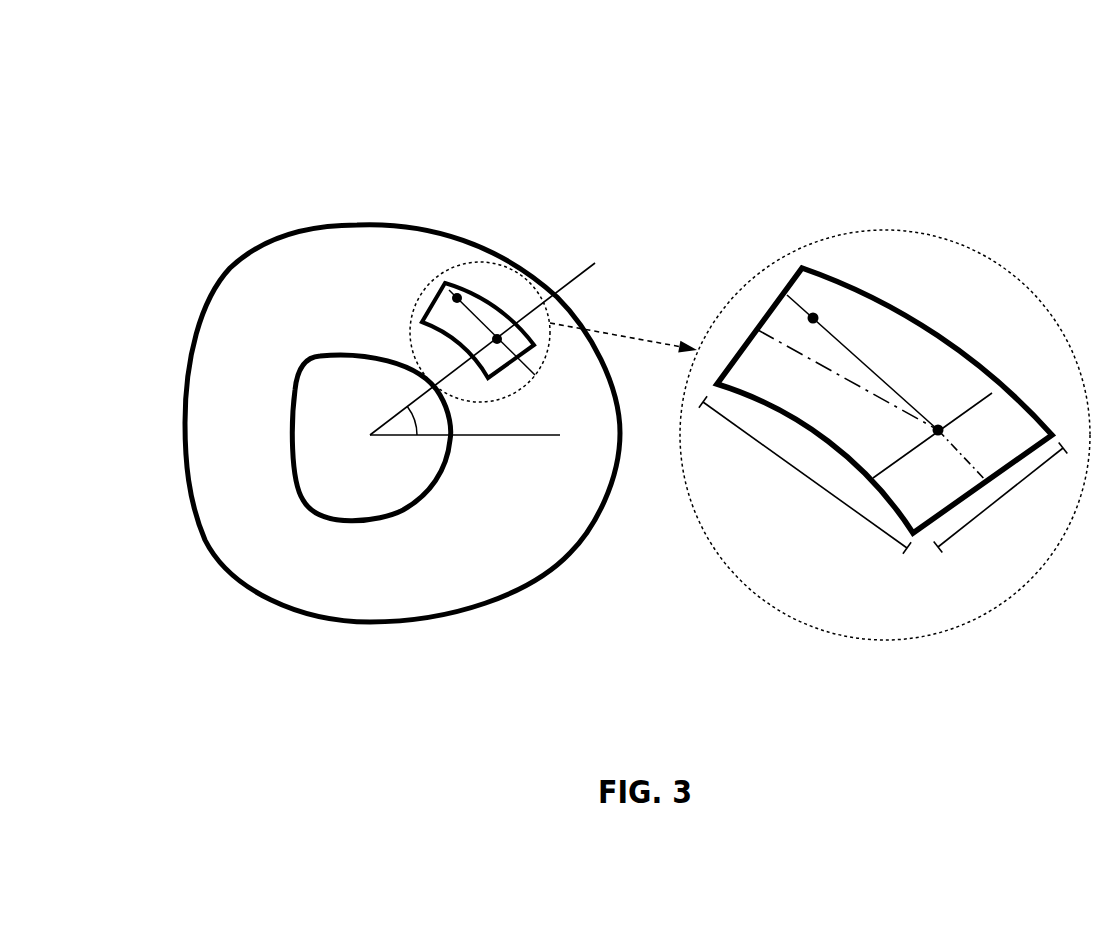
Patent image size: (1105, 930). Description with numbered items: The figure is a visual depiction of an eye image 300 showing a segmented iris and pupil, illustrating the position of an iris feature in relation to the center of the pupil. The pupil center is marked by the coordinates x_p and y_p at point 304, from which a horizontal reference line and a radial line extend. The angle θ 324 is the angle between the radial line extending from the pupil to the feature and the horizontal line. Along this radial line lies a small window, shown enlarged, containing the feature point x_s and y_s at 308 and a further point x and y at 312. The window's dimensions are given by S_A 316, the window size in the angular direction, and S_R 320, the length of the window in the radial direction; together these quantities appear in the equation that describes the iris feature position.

The eye image 300 is at (255, 113).
The pupil center point (x_p, y_p) 304 is at (370, 435).
The feature point (x_s, y_s) 308 is at (938, 430).
The point (x, y) 312 is at (815, 314).
The angular window size S_A 316 is at (843, 505).
The radial window length S_R 320 is at (958, 533).
The angle θ 324 is at (417, 427).